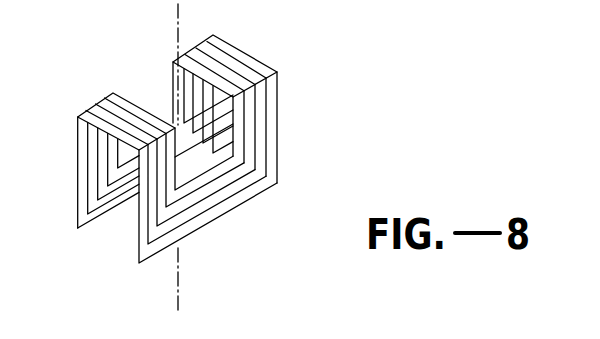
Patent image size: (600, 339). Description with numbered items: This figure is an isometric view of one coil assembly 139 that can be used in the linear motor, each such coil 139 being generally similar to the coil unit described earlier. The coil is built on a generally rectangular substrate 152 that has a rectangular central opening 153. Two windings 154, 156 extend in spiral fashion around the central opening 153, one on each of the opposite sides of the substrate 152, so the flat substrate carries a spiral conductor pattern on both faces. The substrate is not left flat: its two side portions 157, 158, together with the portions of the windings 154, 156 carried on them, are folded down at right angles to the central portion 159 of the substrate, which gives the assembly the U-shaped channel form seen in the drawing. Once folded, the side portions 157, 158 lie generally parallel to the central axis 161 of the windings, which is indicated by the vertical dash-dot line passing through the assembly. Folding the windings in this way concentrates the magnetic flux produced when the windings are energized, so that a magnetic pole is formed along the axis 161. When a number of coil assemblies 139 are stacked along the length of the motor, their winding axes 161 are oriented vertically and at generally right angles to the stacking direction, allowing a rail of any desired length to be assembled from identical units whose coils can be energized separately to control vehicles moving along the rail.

The coil 139 is at (113, 93).
The substrate 152 is at (256, 58).
The central opening 153 is at (131, 101).
The winding 154 is at (212, 208).
The winding 156 is at (108, 196).
The side portion 157 is at (253, 192).
The side portion 158 is at (76, 208).
The central portion 159 is at (96, 116).
The central axis 161 is at (178, 296).